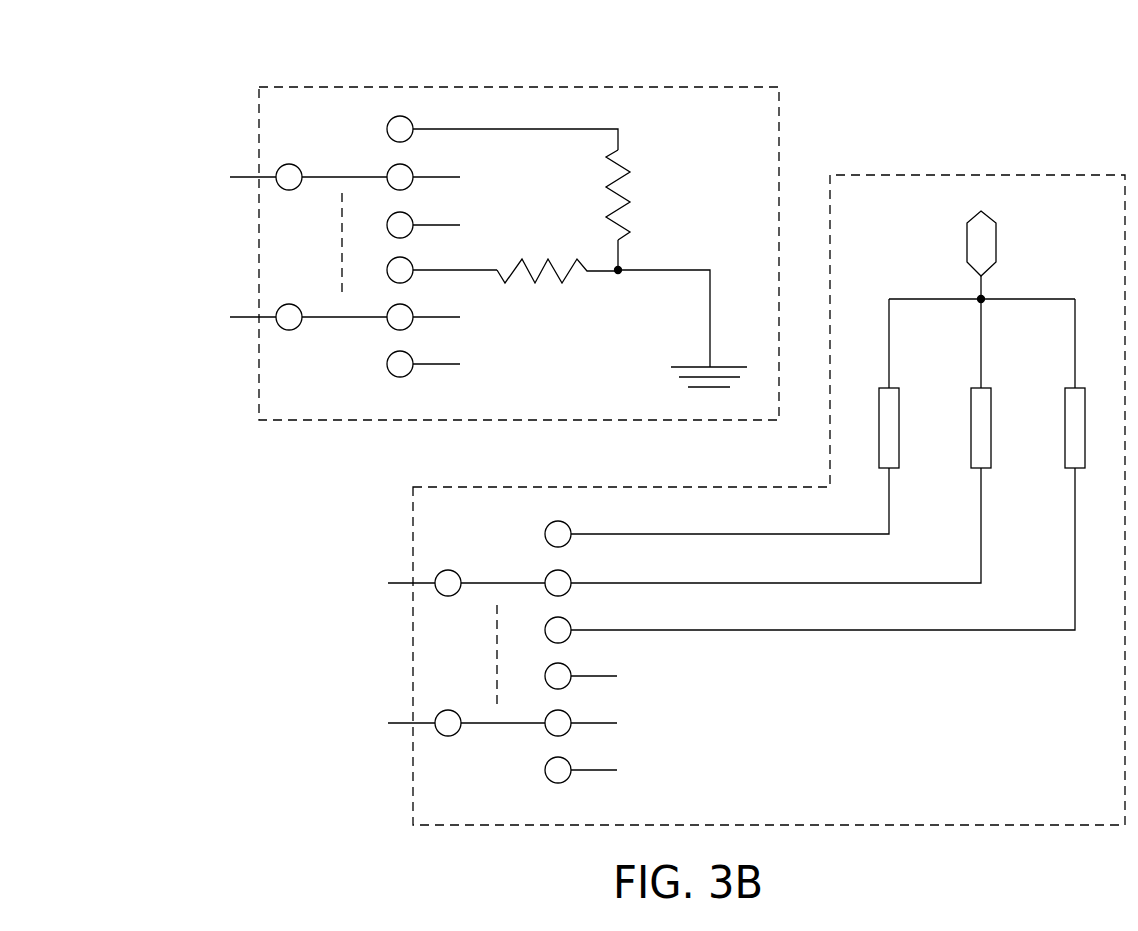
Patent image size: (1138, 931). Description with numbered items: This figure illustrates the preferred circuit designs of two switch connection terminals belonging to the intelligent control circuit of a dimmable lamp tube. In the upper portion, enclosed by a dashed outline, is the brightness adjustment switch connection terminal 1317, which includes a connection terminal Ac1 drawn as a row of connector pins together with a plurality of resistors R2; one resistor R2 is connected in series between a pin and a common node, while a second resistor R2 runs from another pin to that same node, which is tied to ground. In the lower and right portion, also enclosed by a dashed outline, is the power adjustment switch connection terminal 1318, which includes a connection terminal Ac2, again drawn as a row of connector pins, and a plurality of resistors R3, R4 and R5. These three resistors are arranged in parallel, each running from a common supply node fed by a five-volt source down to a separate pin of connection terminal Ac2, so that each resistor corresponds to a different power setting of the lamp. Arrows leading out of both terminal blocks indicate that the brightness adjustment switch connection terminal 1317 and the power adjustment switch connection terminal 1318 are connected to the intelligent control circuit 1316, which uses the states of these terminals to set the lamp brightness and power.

The intelligent control circuit 1316 is at (230, 256).
The brightness adjustment switch connection terminal 1317 is at (518, 86).
The power adjustment switch connection terminal 1318 is at (1038, 175).
The resistors R2 is at (576, 232).
The resistor R3 is at (751, 416).
The resistor R4 is at (796, 441).
The resistor R5 is at (842, 464).
The connection terminal Ac1 is at (345, 166).
The connection terminal Ac2 is at (501, 568).